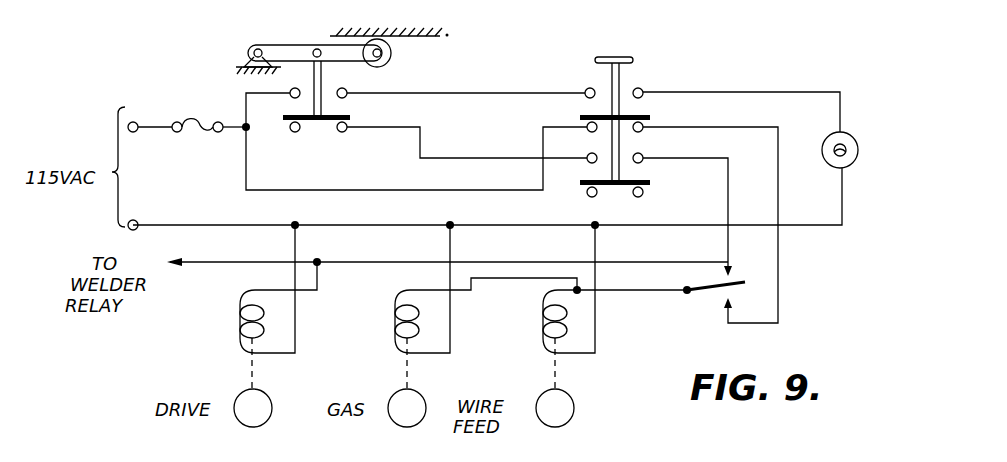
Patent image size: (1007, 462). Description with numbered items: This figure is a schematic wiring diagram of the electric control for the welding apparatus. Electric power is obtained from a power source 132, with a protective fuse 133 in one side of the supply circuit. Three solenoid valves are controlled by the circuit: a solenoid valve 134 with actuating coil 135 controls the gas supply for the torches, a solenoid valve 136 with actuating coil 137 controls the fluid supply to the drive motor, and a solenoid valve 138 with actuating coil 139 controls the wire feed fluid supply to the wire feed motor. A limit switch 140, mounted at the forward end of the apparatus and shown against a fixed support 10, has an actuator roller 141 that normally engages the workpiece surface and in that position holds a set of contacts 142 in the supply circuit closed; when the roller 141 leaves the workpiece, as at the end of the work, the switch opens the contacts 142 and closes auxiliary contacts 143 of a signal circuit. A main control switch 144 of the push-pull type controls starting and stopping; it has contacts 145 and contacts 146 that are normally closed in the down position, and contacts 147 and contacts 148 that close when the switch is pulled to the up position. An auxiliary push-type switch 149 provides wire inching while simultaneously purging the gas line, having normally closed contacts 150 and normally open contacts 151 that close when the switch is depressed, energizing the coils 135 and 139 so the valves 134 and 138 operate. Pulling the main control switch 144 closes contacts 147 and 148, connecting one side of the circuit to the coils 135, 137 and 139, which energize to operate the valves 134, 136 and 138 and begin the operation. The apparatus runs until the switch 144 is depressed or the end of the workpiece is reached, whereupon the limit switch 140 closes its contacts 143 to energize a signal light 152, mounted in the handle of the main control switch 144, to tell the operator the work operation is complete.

The ground / fixed support 10 is at (418, 42).
The power source 132 is at (125, 176).
The protective fuse 133 is at (198, 118).
The solenoid valve 134 is at (395, 395).
The actuating coil 135 is at (394, 320).
The solenoid valve 136 is at (240, 395).
The actuating coil 137 is at (240, 326).
The solenoid valve 138 is at (545, 390).
The actuating coil 139 is at (543, 313).
The limit switch 140 is at (282, 43).
The actuator roller 141 is at (393, 60).
The contacts 142 is at (320, 131).
The auxiliary contacts 143 is at (335, 89).
The main control switch 144 is at (643, 67).
The contacts 145 is at (628, 131).
The contacts 146 is at (613, 192).
The contacts 147 is at (607, 84).
The contacts 148 is at (607, 155).
The auxiliary switch 149 is at (719, 302).
The normally closed contacts 150 is at (733, 274).
The normally open contacts 151 is at (738, 292).
The signal light 152 is at (633, 42).